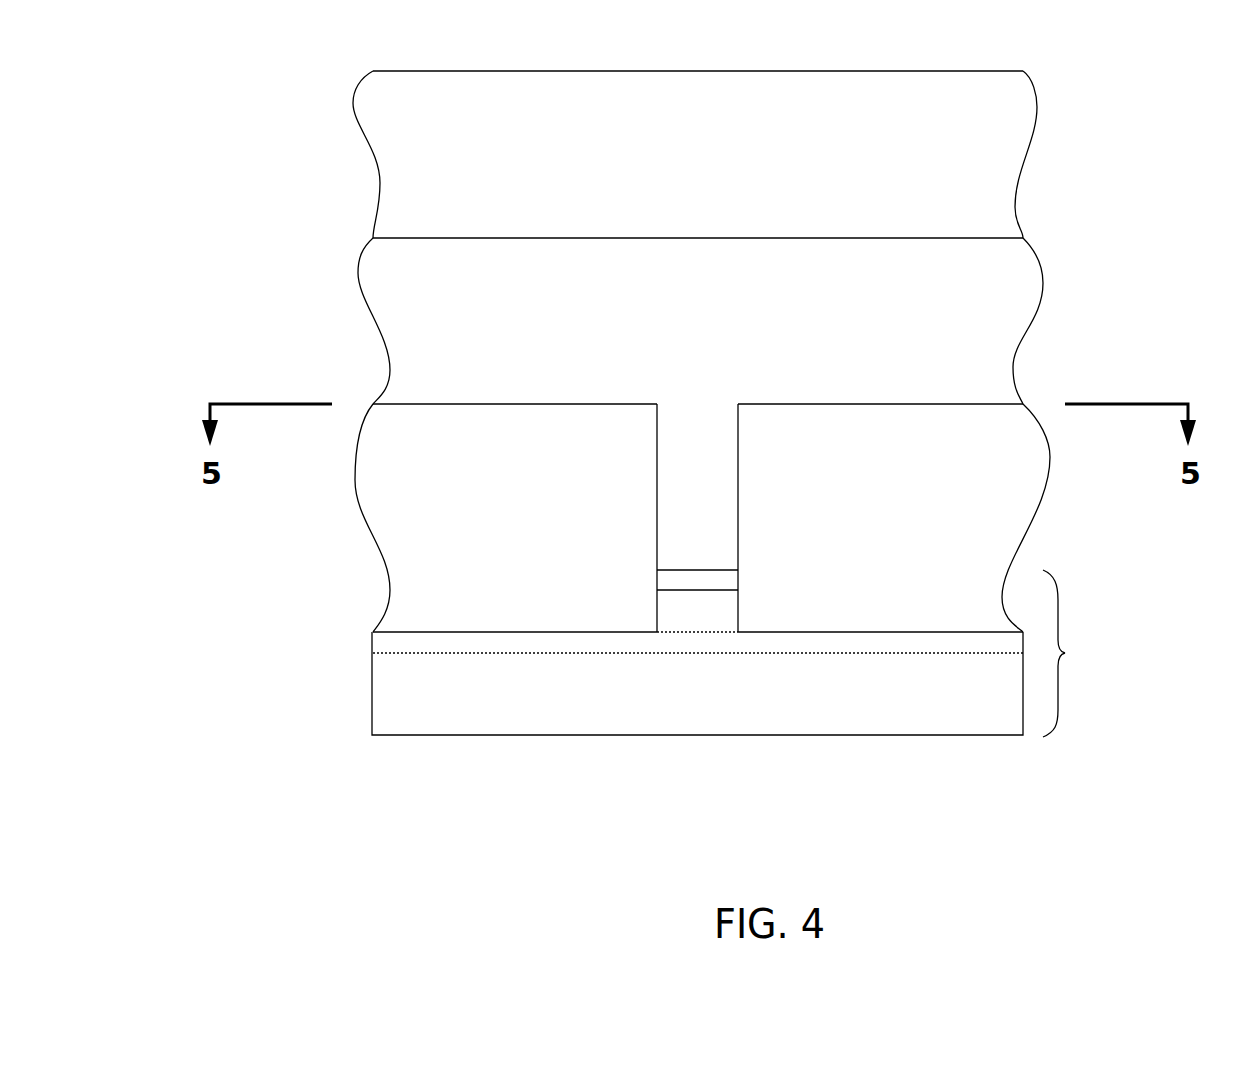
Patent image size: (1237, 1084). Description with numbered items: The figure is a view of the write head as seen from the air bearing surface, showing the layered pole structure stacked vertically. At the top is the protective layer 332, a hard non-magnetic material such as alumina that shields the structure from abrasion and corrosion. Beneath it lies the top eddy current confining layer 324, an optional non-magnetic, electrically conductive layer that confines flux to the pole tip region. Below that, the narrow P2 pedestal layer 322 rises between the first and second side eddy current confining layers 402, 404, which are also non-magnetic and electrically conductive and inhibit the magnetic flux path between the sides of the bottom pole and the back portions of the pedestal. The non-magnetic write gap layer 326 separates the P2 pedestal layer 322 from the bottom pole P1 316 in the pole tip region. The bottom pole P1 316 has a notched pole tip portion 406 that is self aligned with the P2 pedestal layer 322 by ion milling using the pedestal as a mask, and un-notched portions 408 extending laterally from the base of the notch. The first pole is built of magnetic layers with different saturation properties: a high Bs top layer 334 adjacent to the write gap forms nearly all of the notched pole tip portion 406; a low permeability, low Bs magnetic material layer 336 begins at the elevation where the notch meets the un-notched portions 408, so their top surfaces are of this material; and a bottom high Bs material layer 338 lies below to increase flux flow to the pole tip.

The bottom pole P1 316 is at (1066, 594).
The P2 pedestal layer 322 is at (677, 505).
The top eddy current confining layer 324 is at (757, 316).
The write gap layer 326 is at (732, 582).
The protective layer 332 is at (758, 152).
The high Bs top layer 334 is at (680, 603).
The low Bs magnetic material layer 336 is at (890, 645).
The bottom high Bs material layer 338 is at (757, 692).
The first side eddy current confining layer 402 is at (910, 507).
The second side eddy current confining layer 404 is at (530, 506).
The notched pole tip portion 406 is at (657, 606).
The un-notched portions 408 is at (470, 631).